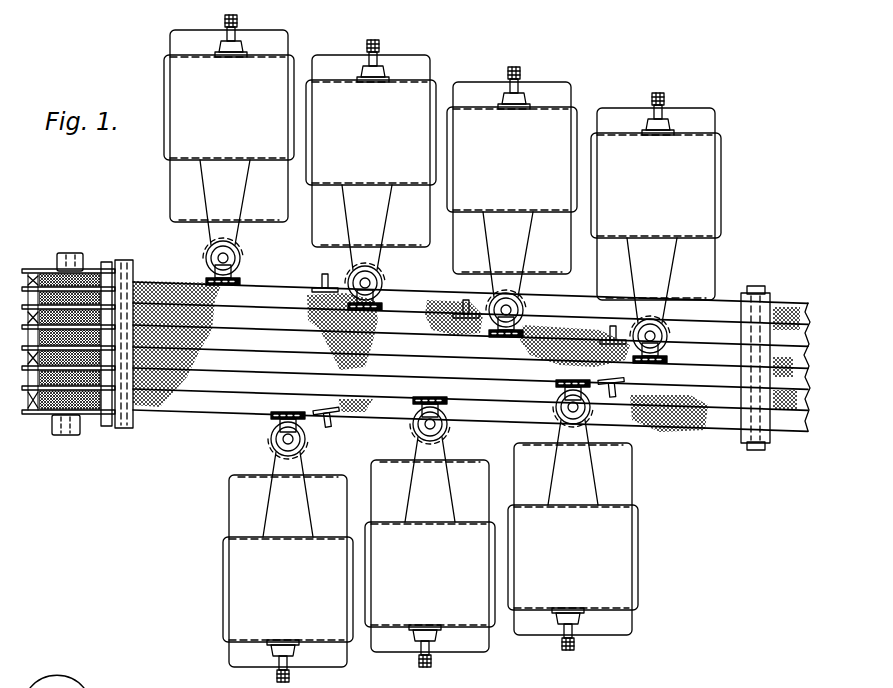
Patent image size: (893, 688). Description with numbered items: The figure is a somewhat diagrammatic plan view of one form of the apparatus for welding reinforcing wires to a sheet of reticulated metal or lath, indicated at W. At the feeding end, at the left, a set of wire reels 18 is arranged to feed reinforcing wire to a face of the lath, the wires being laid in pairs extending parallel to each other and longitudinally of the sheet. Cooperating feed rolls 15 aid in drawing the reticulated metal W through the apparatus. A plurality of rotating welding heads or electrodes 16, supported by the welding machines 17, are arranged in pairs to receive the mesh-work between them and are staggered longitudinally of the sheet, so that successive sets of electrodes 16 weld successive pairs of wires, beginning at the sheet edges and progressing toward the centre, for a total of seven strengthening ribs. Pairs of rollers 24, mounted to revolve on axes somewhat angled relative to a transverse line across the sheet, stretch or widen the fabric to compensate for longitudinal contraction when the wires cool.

The feed rolls 15 is at (758, 308).
The rotating welding heads or electrodes 16 is at (241, 284).
The welding machines 17 is at (442, 348).
The upper set of wire reels 18 is at (25, 300).
The pairs of rollers 24 is at (663, 460).
The reticulated metal W is at (805, 417).